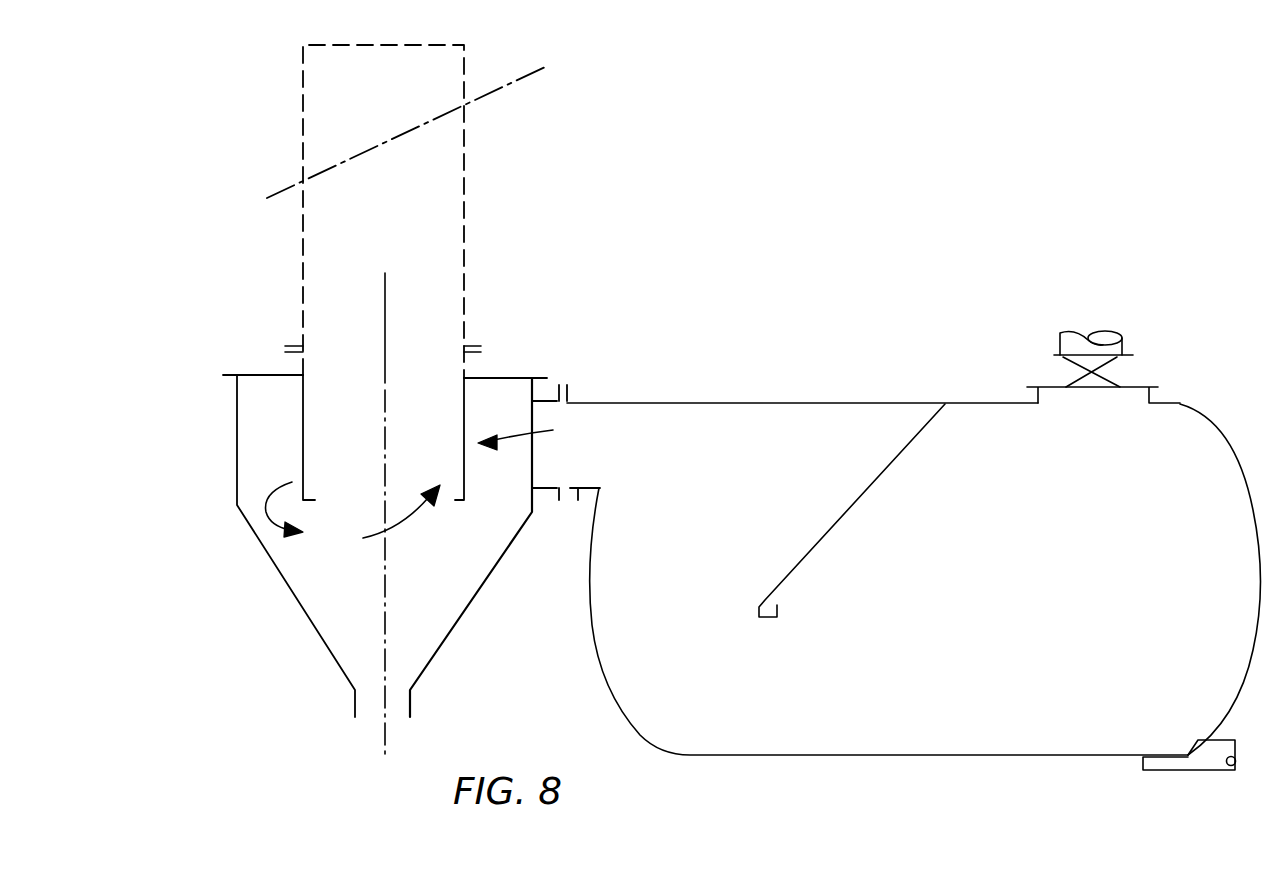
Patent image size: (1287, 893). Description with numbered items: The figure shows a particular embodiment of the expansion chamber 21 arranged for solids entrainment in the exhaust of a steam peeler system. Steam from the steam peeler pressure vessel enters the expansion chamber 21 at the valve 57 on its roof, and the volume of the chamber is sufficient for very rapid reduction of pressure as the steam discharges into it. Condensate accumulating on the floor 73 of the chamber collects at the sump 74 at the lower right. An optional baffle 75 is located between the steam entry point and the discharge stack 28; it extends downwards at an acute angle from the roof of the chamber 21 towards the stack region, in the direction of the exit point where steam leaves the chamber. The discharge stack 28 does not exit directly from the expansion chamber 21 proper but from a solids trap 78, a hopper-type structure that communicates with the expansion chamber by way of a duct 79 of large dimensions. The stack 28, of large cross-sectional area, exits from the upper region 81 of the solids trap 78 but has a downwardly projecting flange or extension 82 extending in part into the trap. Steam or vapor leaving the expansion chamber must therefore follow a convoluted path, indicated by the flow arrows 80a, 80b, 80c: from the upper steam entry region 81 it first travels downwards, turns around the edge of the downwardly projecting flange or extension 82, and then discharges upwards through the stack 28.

The expansion chamber 21 is at (750, 402).
The discharge stack 28 is at (466, 185).
The valve 57 is at (1073, 370).
The floor 73 is at (918, 753).
The sump 74 is at (1187, 753).
The baffle 75 is at (825, 537).
The solids trap 78 is at (292, 573).
The duct 79 is at (578, 500).
The gas flow arrow 80a is at (522, 437).
The gas flow arrow 80b is at (268, 522).
The gas flow arrow 80c is at (408, 520).
The upper region 81 is at (281, 447).
The downwardly projecting flange or extension 82 is at (464, 477).